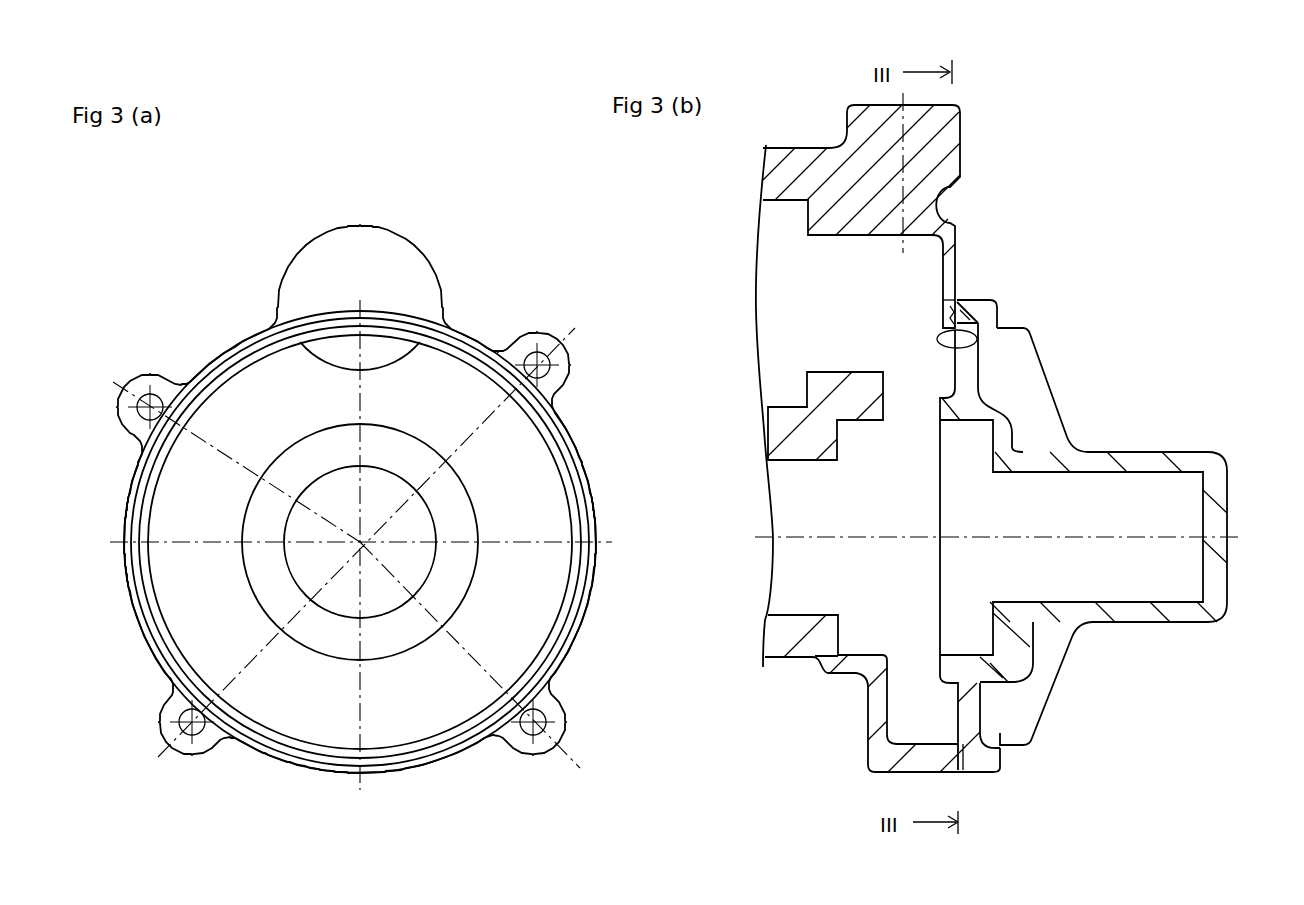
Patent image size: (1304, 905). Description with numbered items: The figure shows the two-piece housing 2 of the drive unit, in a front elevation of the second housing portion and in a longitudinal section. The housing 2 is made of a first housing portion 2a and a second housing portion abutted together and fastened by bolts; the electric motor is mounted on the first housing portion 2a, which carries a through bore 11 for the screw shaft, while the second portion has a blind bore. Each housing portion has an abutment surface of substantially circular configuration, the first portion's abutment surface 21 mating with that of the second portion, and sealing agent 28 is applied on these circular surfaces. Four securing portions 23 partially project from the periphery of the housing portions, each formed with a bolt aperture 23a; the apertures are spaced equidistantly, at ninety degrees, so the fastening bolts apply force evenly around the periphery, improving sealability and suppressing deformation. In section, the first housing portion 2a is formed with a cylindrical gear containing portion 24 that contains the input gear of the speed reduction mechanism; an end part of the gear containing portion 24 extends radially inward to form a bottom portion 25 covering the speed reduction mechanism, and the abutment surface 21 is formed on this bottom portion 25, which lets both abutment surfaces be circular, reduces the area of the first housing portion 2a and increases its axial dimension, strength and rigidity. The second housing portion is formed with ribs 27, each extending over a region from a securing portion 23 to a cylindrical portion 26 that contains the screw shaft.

The housing 2 is at (1078, 226).
The first housing portion 2a is at (925, 193).
The through bore 11 is at (805, 460).
The abutment surface 21 is at (970, 302).
The securing portion 23 is at (132, 393).
The bolt aperture 23a is at (153, 398).
The cylindrical gear containing portion 24 is at (852, 262).
The bottom portion 25 is at (943, 282).
The cylindrical portion 26 is at (1172, 452).
The rib 27 is at (1020, 388).
The sealing agent 28 is at (950, 315).